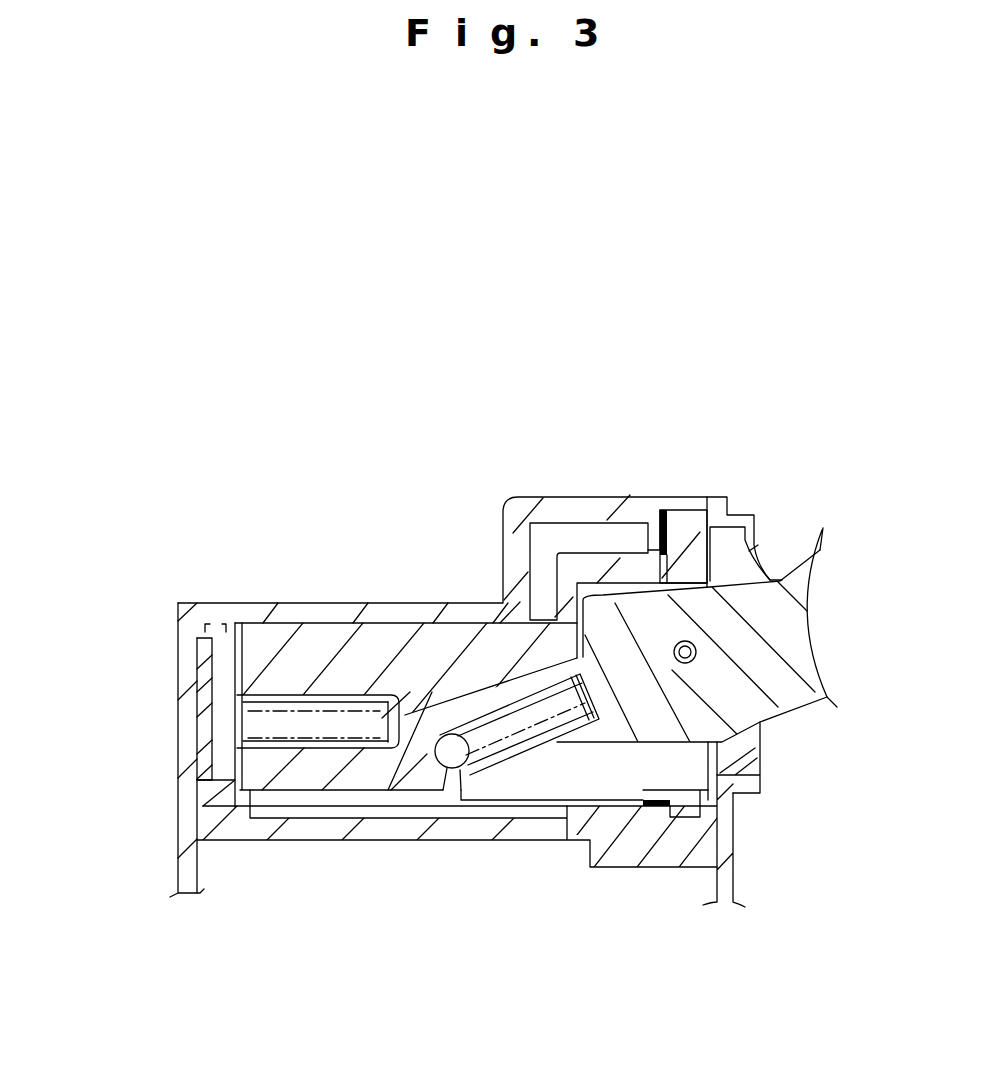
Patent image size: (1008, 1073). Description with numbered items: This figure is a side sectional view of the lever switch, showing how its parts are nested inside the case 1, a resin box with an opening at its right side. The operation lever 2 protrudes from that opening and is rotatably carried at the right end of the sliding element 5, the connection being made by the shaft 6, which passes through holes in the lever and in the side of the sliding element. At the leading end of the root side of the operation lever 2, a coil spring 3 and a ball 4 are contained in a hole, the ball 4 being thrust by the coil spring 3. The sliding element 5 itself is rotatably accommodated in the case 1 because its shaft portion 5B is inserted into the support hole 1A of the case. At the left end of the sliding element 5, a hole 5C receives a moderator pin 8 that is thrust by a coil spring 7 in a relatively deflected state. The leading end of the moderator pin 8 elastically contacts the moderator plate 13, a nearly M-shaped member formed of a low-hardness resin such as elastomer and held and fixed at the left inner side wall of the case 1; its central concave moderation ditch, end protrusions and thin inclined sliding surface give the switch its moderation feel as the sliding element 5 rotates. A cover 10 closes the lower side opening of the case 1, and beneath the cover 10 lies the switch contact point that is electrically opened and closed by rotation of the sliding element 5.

The case 1 is at (515, 500).
The support hole 1A is at (675, 496).
The operation lever 2 is at (787, 643).
The coil spring 3 is at (503, 728).
The ball 4 is at (447, 767).
The sliding element 5 is at (308, 768).
The shaft portion 5B is at (693, 523).
The hole 5C is at (370, 742).
The shaft 6 is at (697, 658).
The coil spring 7 is at (347, 723).
The moderator pin 8 is at (277, 697).
The cover 10 is at (657, 857).
The moderator plate 13 is at (207, 720).